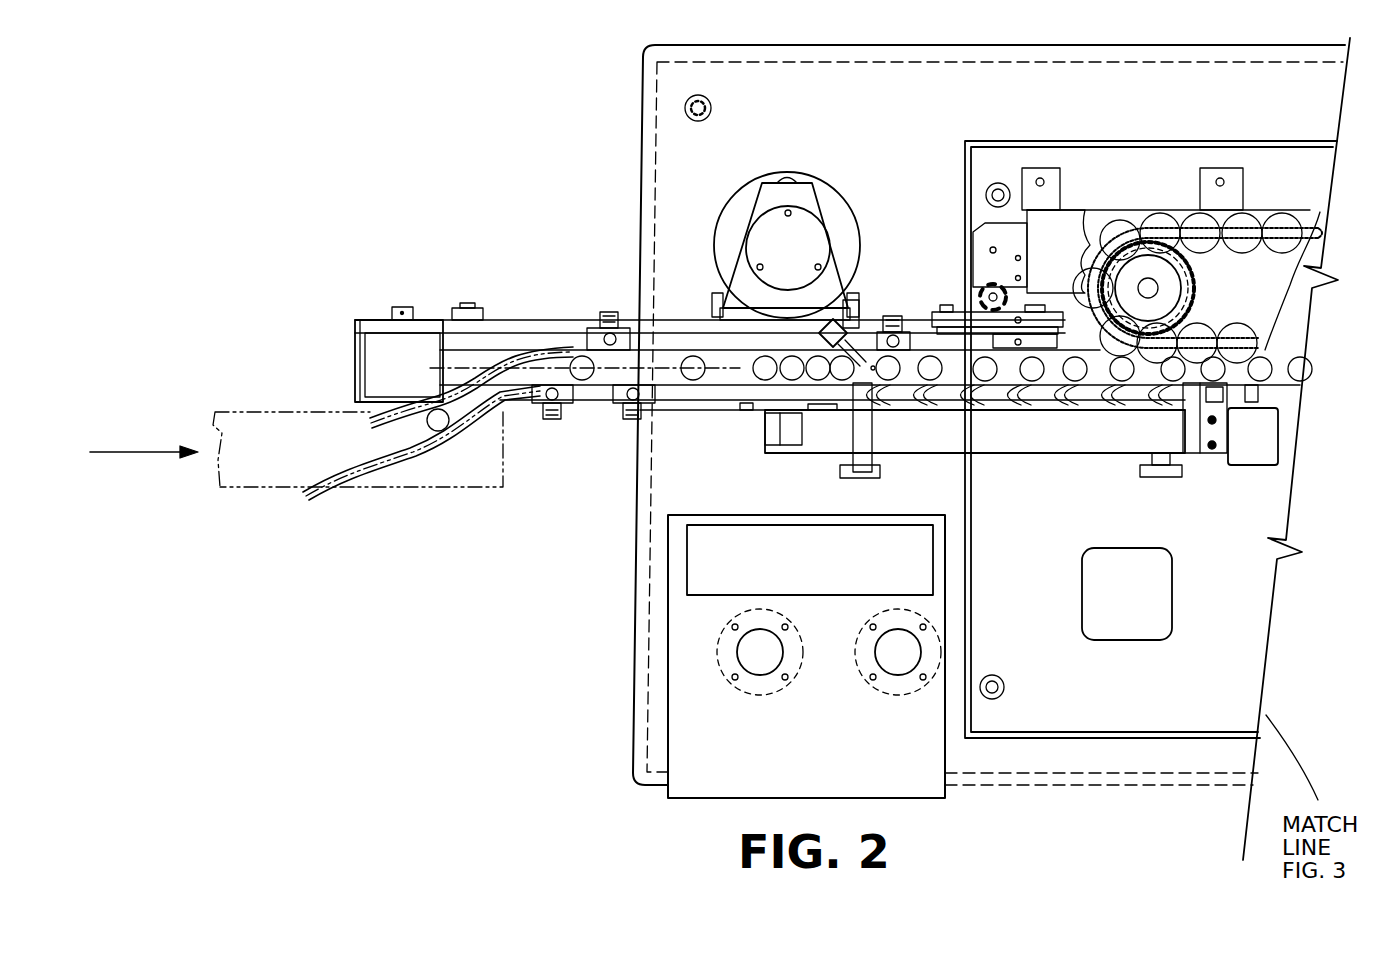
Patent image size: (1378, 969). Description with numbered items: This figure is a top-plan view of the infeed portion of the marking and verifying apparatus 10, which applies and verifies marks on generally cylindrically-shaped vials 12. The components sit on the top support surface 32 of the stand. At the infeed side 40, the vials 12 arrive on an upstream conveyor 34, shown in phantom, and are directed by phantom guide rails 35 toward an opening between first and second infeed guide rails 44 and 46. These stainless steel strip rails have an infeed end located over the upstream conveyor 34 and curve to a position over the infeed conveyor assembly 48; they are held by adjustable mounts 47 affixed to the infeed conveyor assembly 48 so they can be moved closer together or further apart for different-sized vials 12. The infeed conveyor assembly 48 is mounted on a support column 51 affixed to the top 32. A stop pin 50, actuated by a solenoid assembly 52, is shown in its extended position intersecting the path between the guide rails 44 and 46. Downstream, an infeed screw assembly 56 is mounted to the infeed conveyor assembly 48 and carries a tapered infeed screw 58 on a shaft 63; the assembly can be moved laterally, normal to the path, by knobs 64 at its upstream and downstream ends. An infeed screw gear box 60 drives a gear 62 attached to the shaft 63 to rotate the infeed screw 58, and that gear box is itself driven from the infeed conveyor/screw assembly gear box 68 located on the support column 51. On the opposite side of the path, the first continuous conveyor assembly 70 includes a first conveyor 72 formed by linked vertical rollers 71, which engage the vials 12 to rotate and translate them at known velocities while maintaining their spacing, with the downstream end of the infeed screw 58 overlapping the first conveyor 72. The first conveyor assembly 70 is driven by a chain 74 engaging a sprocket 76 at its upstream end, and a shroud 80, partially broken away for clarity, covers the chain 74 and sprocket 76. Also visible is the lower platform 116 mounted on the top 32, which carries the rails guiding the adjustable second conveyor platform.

The marking and verifying apparatus 10 is at (588, 660).
The vials 12 is at (582, 357).
The top support surface 32 is at (863, 123).
The upstream conveyor 34 is at (243, 482).
The guide rails 35 is at (287, 412).
The infeed side 40 is at (376, 307).
The first infeed guide rail 44 is at (390, 461).
The second infeed guide rail 46 is at (368, 424).
The adjustable mounts 47 is at (604, 313).
The infeed conveyor assembly 48 is at (444, 317).
The stop pin 50 is at (848, 341).
The support column 51 is at (845, 220).
The solenoid assembly 52 is at (858, 322).
The infeed screw assembly 56 is at (1027, 453).
The infeed screw 58 is at (960, 392).
The infeed screw gear box 60 is at (1253, 452).
The gear 62 is at (1260, 394).
The shaft 63 is at (1212, 449).
The knobs 64 is at (870, 478).
The infeed conveyor/screw assembly gear box 68 is at (744, 236).
The first continuous conveyor assembly 70 is at (1103, 205).
The linked vertical rollers 71 is at (1160, 225).
The first conveyor 72 is at (1290, 222).
The chain 74 is at (1247, 227).
The sprocket 76 is at (1183, 282).
The shroud 80 is at (1067, 237).
The lower platform 116 is at (1057, 720).